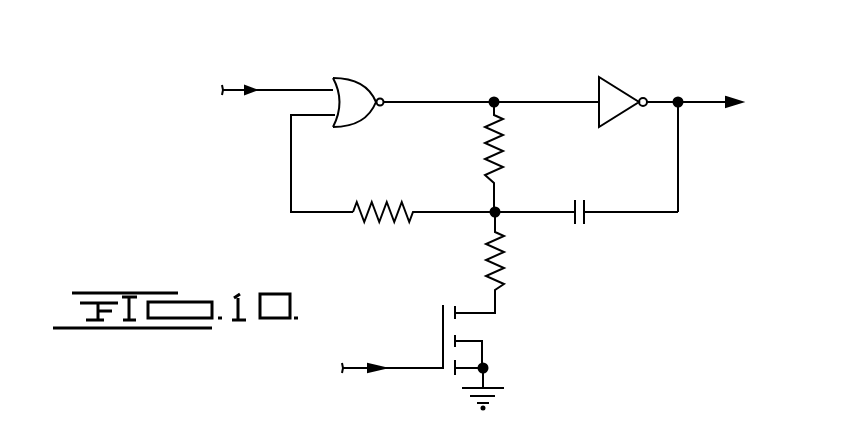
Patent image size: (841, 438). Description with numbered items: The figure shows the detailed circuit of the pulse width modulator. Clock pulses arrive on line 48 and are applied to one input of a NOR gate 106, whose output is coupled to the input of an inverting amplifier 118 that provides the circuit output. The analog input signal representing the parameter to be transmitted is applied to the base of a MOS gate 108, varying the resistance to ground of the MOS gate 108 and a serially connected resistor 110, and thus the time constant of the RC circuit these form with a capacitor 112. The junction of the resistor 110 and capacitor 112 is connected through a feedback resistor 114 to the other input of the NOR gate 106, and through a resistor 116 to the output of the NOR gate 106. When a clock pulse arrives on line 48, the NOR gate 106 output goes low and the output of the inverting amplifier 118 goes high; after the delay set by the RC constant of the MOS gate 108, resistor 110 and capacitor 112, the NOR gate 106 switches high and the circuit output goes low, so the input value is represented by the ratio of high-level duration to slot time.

The line 48 is at (280, 88).
The NOR gate 106 is at (360, 80).
The MOS gate 108 is at (507, 333).
The resistor 110 is at (485, 255).
The capacitor 112 is at (578, 226).
The feedback resistor 114 is at (392, 206).
The resistor 116 is at (505, 168).
The inverting amplifier 118 is at (598, 90).